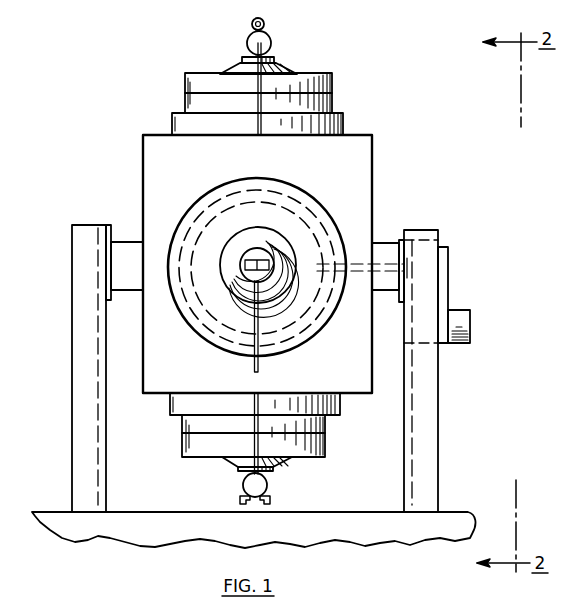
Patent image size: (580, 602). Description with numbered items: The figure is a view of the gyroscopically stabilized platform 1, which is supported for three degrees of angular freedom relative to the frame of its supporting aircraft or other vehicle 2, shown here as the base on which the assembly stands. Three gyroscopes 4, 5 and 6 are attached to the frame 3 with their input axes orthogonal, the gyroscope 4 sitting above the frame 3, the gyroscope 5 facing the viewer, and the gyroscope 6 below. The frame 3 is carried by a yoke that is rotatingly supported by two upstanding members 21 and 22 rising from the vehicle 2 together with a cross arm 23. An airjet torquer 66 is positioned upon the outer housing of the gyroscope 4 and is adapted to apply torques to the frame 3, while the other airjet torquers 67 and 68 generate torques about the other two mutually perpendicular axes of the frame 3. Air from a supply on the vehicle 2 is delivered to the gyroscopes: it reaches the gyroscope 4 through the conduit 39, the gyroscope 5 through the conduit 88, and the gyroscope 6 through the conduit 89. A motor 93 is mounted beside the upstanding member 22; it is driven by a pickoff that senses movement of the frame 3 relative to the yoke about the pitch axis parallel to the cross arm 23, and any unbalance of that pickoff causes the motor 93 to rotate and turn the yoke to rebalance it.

The gyroscopically stabilized platform 1 is at (382, 148).
The vehicle 2 is at (123, 534).
The frame 3 is at (336, 172).
The gyroscope 4 is at (318, 76).
The gyroscope 5 is at (326, 312).
The gyroscope 6 is at (183, 401).
The upstanding member 21 is at (82, 380).
The upstanding member 22 is at (426, 392).
The cross arm 23 is at (390, 247).
The conduit 39 is at (257, 103).
The airjet torquer 66 is at (265, 40).
The airjet torquer 67 is at (254, 250).
The airjet torquer 68 is at (266, 484).
The conduit 88 is at (261, 366).
The conduit 89 is at (254, 400).
The motor 93 is at (458, 314).